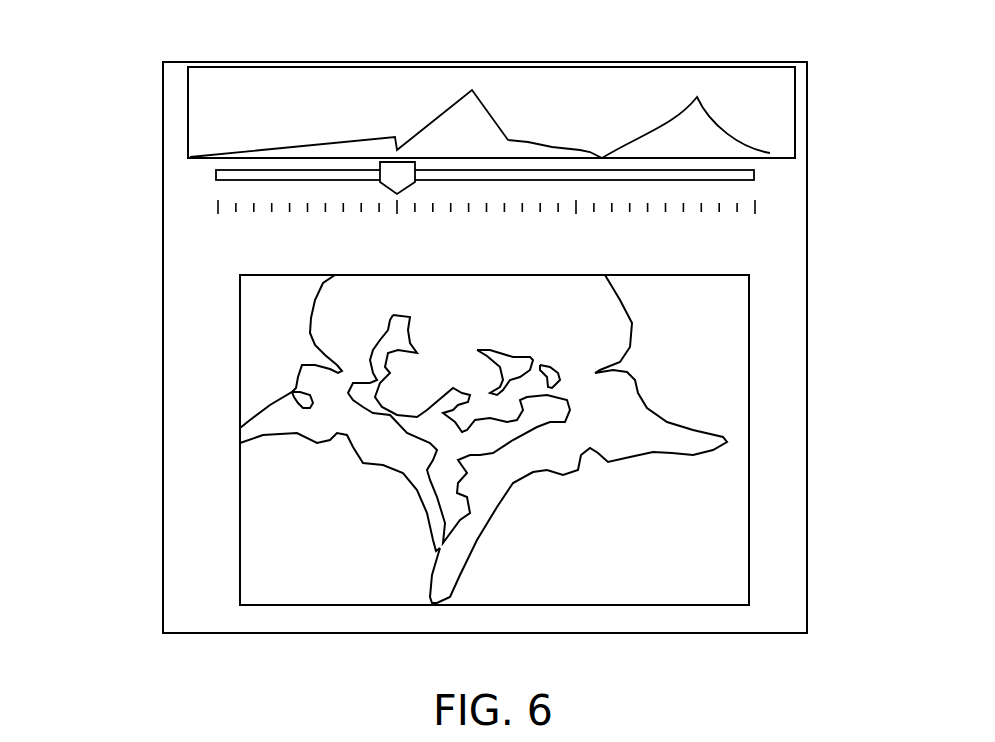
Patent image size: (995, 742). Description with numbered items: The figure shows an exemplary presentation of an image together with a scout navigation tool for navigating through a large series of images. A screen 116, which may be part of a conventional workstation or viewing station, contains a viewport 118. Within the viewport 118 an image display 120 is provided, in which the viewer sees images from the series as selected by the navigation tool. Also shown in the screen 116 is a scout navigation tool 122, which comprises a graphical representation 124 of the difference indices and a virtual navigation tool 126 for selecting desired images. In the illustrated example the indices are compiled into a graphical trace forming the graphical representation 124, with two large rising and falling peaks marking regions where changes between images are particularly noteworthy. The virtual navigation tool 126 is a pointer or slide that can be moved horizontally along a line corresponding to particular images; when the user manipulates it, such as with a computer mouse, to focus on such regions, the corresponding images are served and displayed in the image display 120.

The screen 116 is at (413, 376).
The viewport 118 is at (423, 440).
The image display 120 is at (568, 439).
The scout navigation tool 122 is at (417, 112).
The graphical representation 124 is at (518, 88).
The virtual navigation tool 126 is at (489, 131).